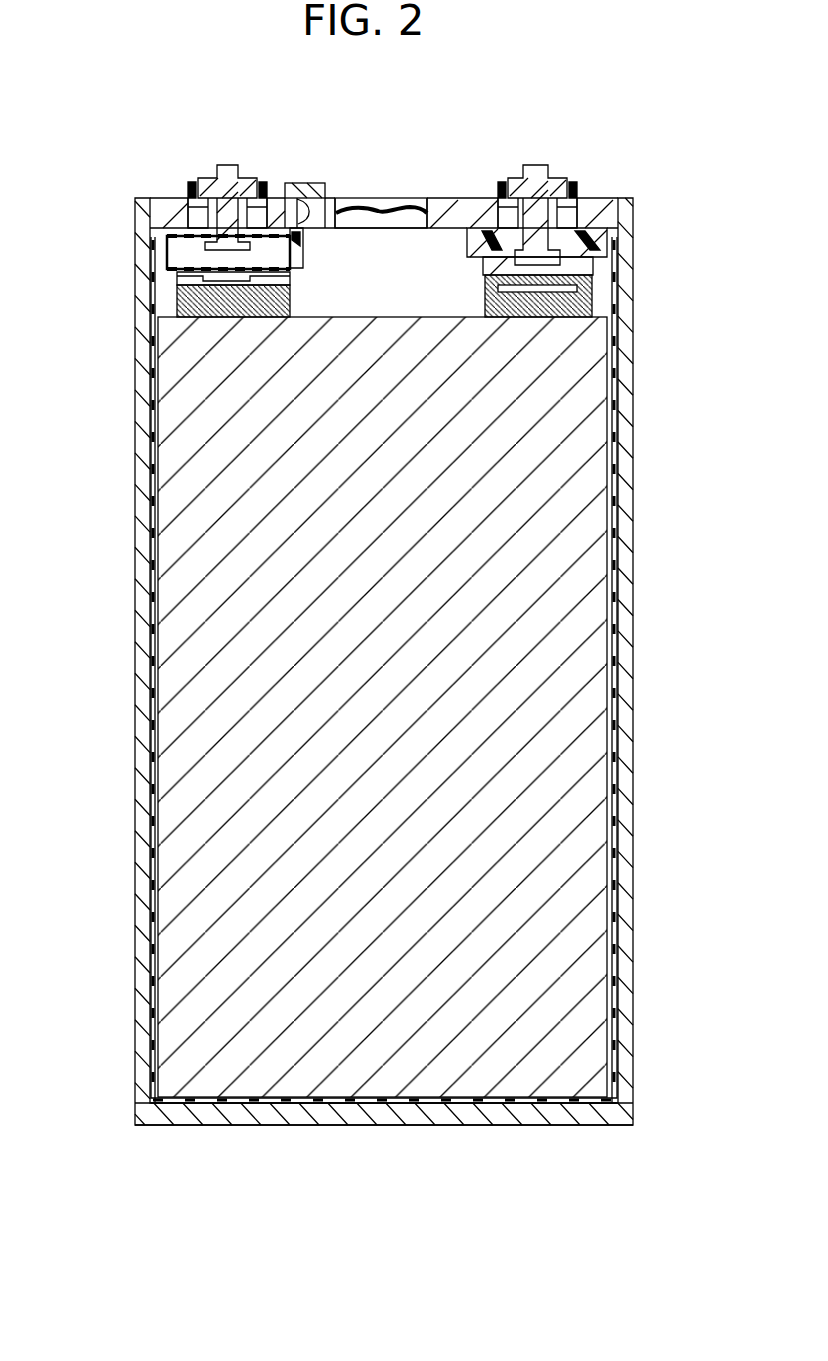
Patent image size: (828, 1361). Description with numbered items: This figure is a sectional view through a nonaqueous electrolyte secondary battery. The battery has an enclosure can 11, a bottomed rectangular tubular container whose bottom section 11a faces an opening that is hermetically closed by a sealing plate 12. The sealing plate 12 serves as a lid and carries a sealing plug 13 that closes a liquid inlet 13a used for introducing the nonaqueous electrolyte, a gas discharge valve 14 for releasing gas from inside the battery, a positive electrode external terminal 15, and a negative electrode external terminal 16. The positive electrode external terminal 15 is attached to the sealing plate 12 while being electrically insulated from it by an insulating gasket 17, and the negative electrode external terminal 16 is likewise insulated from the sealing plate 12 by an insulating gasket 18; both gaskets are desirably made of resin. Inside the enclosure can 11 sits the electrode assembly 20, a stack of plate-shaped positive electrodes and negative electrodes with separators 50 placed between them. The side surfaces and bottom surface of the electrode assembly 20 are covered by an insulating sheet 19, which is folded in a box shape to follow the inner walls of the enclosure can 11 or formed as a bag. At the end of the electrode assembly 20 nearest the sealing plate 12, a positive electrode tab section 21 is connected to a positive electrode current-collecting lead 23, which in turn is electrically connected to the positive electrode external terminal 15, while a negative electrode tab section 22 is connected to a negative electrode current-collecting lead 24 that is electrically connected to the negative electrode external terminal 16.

The enclosure can 11 is at (145, 716).
The bottom section 11a is at (393, 1125).
The sealing plate 12 is at (470, 210).
The sealing plug 13 is at (313, 183).
The liquid inlet 13a is at (297, 199).
The gas discharge valve 14 is at (400, 200).
The positive electrode external terminal 15 is at (228, 167).
The negative electrode external terminal 16 is at (535, 175).
The insulating gasket 17 is at (195, 183).
The insulating gasket 18 is at (578, 186).
The insulating sheet 19 is at (153, 1033).
The electrode assembly 20 is at (200, 610).
The positive electrode tab section 21 is at (185, 302).
The negative electrode tab section 22 is at (575, 305).
The positive electrode current-collecting lead 23 is at (185, 281).
The negative electrode current-collecting lead 24 is at (575, 265).
The separator 50 is at (187, 252).